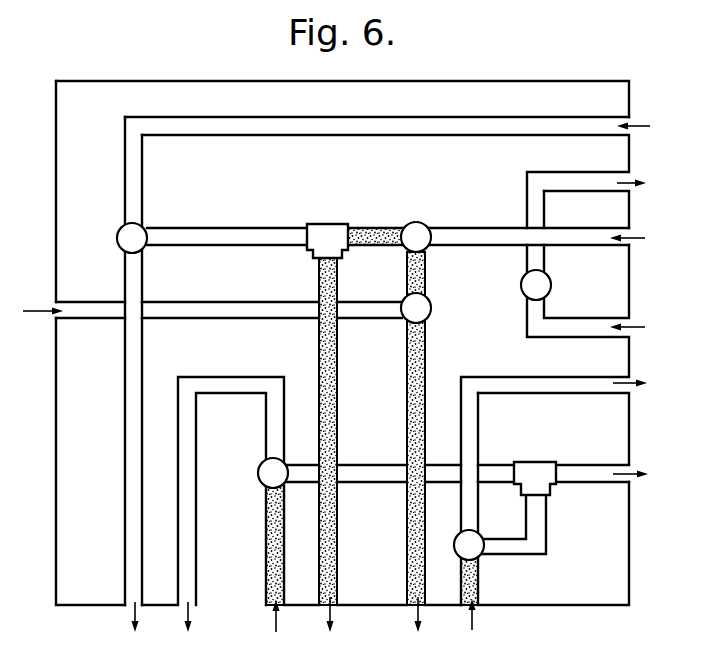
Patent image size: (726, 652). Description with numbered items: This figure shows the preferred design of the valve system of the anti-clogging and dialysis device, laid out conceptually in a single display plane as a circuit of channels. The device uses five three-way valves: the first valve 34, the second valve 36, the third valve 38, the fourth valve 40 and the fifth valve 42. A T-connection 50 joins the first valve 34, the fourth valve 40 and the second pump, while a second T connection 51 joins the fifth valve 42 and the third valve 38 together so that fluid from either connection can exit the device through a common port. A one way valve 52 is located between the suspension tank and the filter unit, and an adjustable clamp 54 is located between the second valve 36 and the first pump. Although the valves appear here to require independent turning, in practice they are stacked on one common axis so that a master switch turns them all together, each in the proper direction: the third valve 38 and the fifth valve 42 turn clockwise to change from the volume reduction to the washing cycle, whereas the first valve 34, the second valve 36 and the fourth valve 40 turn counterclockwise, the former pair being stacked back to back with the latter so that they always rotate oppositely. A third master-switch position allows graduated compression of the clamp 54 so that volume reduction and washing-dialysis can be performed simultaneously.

The first valve 34 is at (423, 225).
The second valve 36 is at (430, 313).
The third valve 38 is at (474, 547).
The fourth valve 40 is at (137, 232).
The fifth valve 42 is at (262, 478).
The T-connection 50 is at (320, 232).
The T connection 51 is at (545, 466).
The one way valve 52 is at (542, 287).
The adjustable clamp 54 is at (435, 537).